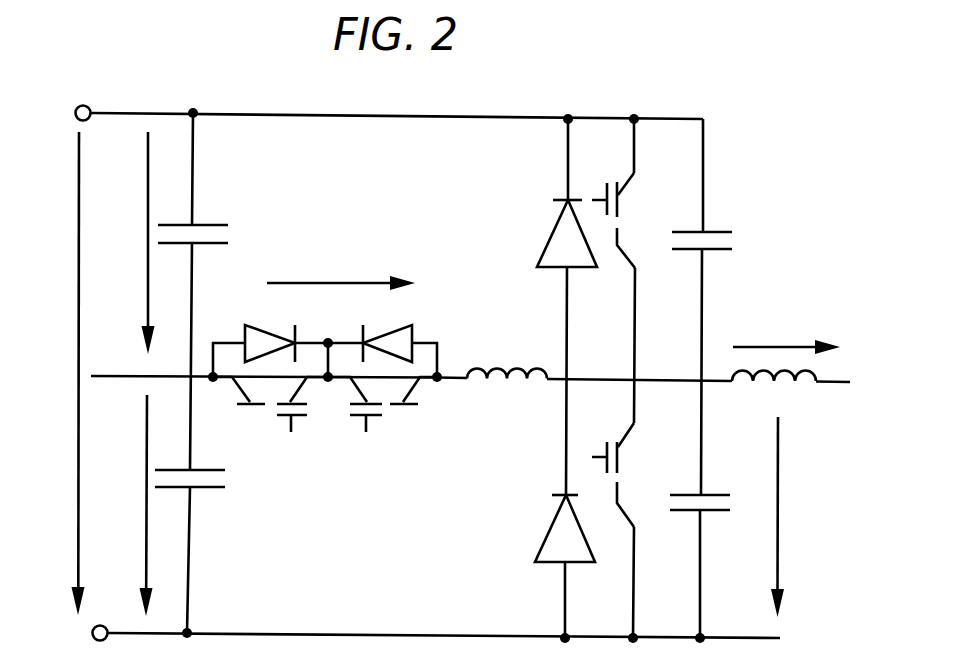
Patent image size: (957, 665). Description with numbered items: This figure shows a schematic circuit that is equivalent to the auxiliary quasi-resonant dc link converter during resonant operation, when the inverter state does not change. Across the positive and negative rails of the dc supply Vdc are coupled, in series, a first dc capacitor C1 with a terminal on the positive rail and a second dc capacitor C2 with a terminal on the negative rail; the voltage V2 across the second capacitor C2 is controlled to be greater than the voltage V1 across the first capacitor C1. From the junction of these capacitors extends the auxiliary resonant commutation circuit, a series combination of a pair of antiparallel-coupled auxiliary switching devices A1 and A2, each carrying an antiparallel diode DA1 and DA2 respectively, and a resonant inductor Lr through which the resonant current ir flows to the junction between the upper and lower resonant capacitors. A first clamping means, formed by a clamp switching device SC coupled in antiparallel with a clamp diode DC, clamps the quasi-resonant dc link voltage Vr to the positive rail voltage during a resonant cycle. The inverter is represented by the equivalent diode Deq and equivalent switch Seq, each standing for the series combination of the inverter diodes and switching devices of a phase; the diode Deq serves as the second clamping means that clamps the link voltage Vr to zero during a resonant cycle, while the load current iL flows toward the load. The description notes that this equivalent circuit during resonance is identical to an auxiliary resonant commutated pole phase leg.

The dc supply Vdc is at (56, 373).
The voltage across first capacitor V1 is at (133, 243).
The voltage across second capacitor V2 is at (132, 505).
The first dc capacitor C1 is at (193, 212).
The second dc capacitor C2 is at (194, 503).
The antiparallel diode DA1 is at (270, 330).
The antiparallel diode DA2 is at (382, 330).
The auxiliary switching device A1 is at (270, 419).
The auxiliary switching device A2 is at (382, 419).
The resonant current ir is at (341, 269).
The resonant inductor Lr is at (507, 356).
The clamp diode DC is at (561, 212).
The clamp switching device SC is at (625, 220).
The equivalent diode Deq is at (548, 505).
The equivalent switch Seq is at (627, 475).
The load current iL is at (786, 326).
The quasi-resonant dc link voltage Vr is at (791, 517).